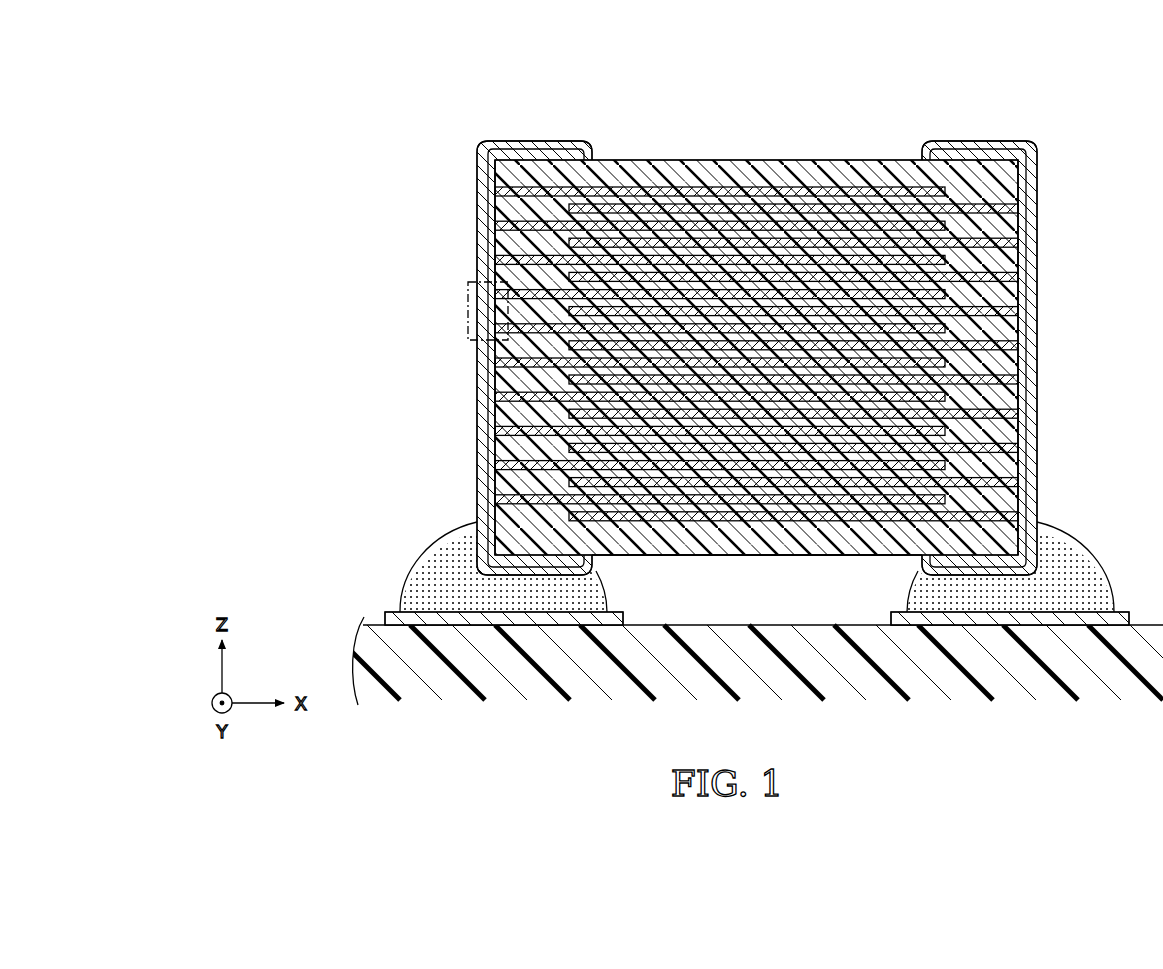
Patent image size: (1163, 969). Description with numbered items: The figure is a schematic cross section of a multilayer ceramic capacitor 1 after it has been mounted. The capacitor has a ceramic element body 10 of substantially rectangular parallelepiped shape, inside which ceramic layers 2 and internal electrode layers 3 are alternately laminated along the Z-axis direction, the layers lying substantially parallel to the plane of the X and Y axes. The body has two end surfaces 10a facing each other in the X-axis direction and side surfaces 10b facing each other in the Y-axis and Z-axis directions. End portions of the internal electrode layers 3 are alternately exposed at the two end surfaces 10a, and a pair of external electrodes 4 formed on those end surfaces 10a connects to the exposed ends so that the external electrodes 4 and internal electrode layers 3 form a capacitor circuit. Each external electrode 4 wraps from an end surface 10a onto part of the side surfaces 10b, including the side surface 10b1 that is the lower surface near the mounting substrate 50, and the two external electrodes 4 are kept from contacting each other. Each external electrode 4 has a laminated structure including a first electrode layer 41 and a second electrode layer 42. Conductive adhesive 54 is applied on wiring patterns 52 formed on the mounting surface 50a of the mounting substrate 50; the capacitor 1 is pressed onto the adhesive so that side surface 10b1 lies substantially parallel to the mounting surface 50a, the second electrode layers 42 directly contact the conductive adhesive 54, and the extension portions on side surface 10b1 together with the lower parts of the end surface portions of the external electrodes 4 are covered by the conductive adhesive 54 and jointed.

The multilayer ceramic capacitor 1 is at (758, 384).
The ceramic layers 2 is at (721, 198).
The internal electrode layers 3 is at (810, 185).
The external electrodes 4 is at (757, 323).
The ceramic element body 10 is at (758, 409).
The end surfaces 10a is at (496, 247).
The side surfaces 10b is at (893, 158).
The side surface close to mounting surface 10b1 is at (682, 557).
The first electrode layer 41 is at (491, 451).
The second electrode layer 42 is at (481, 405).
The mounting substrate 50 is at (1087, 655).
The mounting surface 50a is at (800, 627).
The wiring patterns 52 is at (385, 612).
The conductive adhesive 54 is at (445, 560).